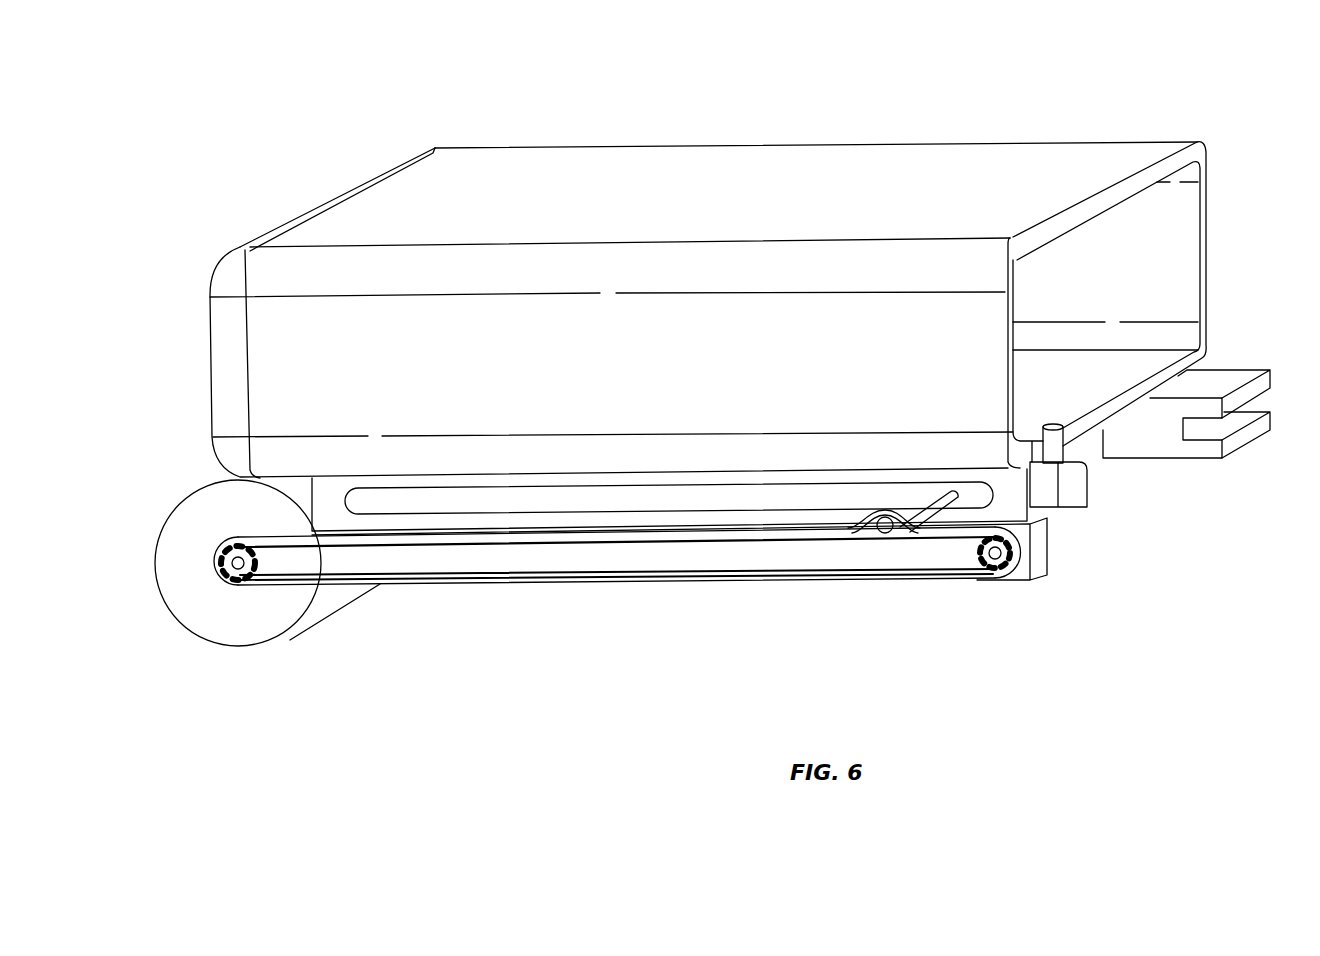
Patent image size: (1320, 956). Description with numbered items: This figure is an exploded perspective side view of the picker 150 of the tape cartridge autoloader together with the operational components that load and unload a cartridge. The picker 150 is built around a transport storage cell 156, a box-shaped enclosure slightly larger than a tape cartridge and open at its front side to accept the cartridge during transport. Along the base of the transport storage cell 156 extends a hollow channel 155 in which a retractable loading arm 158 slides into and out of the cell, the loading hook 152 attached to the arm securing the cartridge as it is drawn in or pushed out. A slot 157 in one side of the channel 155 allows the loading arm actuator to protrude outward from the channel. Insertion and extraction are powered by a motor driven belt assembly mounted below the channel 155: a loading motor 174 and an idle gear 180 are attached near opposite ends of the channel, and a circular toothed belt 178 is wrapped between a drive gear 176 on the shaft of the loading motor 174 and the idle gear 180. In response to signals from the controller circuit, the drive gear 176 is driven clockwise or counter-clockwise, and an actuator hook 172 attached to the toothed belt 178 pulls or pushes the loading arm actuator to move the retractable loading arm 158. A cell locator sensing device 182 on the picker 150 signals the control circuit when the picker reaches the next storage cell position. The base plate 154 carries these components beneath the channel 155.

The picker 150 is at (1177, 88).
The loading hook 152 is at (1053, 425).
The base plate 154 is at (962, 481).
The hollow channel 155 is at (328, 496).
The transport storage cell 156 is at (375, 207).
The slot 157 is at (680, 493).
The retractable loading arm 158 is at (1073, 493).
The actuator hook 172 is at (918, 558).
The loading motor 174 is at (178, 548).
The drive gear 176 is at (218, 568).
The circular toothed belt 178 is at (441, 587).
The idle gear 180 is at (992, 582).
The cell locator sensing device 182 is at (1213, 430).